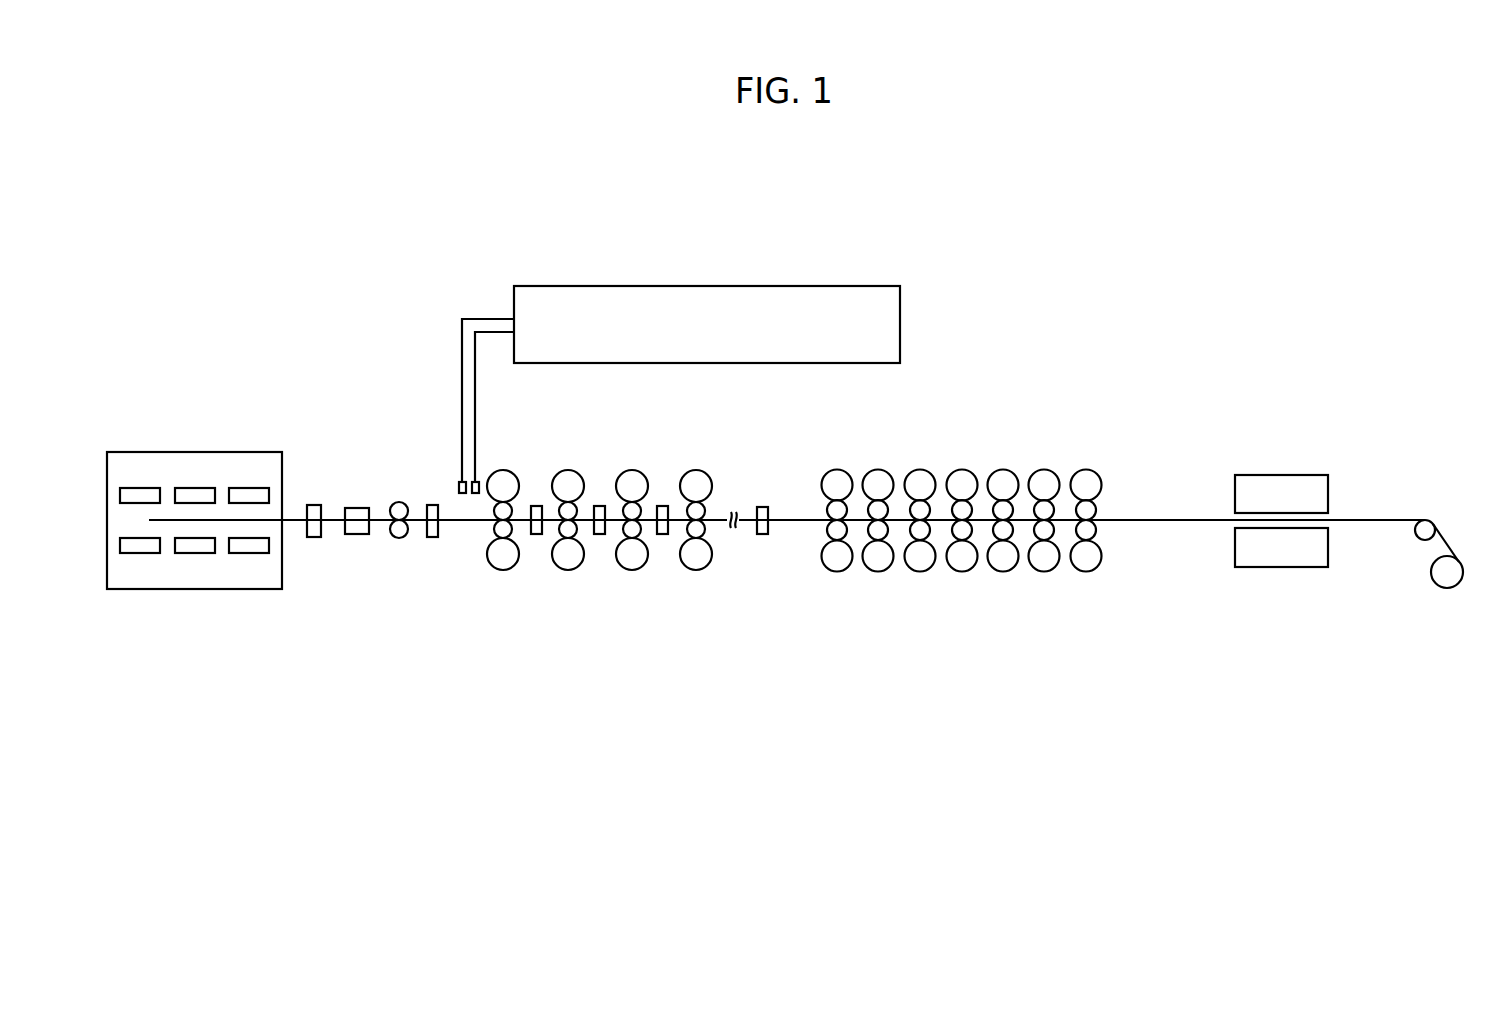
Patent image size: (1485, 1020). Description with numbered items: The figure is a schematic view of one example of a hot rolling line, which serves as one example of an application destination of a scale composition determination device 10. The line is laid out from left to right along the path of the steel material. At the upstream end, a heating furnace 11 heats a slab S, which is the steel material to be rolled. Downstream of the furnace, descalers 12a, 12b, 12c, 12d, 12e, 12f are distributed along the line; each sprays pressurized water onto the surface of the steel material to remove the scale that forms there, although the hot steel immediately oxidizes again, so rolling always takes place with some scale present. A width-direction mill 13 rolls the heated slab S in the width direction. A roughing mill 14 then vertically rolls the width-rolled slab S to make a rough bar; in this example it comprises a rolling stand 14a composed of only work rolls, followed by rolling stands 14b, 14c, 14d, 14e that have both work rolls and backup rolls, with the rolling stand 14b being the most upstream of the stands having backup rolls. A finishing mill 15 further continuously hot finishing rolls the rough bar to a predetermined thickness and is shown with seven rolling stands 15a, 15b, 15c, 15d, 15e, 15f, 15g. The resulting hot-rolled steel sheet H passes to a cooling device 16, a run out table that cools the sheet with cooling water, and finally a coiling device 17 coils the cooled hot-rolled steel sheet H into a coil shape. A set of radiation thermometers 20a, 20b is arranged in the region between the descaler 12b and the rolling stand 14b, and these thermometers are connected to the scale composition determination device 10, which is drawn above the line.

The scale composition determination device 10 is at (708, 286).
The heating furnace 11 is at (195, 452).
The slab S is at (222, 522).
The descaler 12a is at (313, 505).
The descaler 12b is at (432, 534).
The descaler 12c is at (536, 534).
The descaler 12d is at (599, 534).
The descaler 12e is at (662, 534).
The descaler 12f is at (762, 534).
The width-direction mill 13 is at (357, 534).
The roughing mill 14 is at (579, 522).
The rolling stand 14a is at (399, 538).
The rolling stand 14b is at (503, 571).
The rolling stand 14c is at (568, 571).
The rolling stand 14d is at (632, 571).
The rolling stand 14e is at (696, 571).
The finishing mill 15 is at (961, 521).
The rolling stand 15a is at (837, 572).
The rolling stand 15b is at (878, 572).
The rolling stand 15c is at (920, 572).
The rolling stand 15d is at (962, 572).
The rolling stand 15e is at (1003, 572).
The rolling stand 15f is at (1044, 572).
The rolling stand 15g is at (1086, 572).
The cooling device 16 is at (1283, 475).
The hot-rolled steel sheet H is at (1374, 519).
The coiling device 17 is at (1447, 588).
The radiation thermometer 20a is at (461, 481).
The radiation thermometer 20b is at (477, 481).